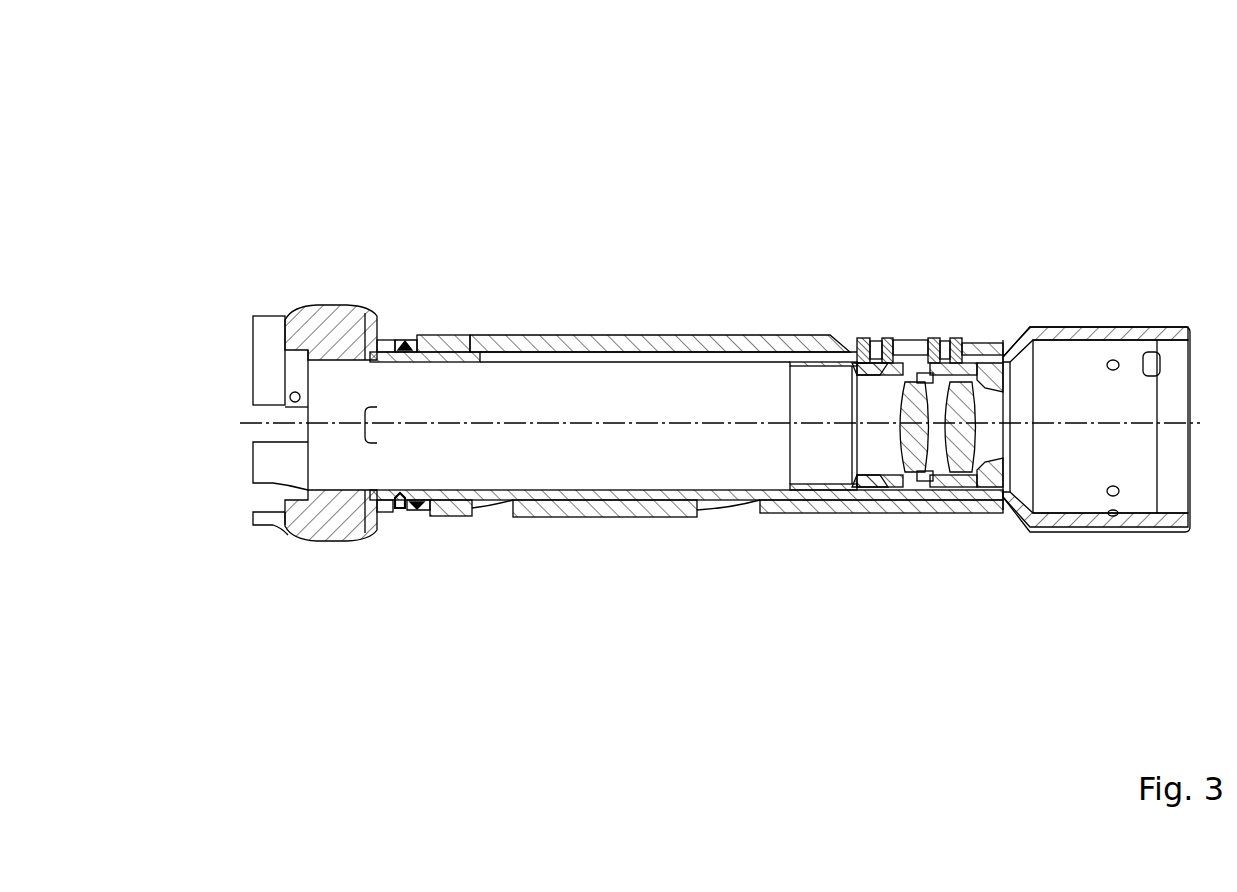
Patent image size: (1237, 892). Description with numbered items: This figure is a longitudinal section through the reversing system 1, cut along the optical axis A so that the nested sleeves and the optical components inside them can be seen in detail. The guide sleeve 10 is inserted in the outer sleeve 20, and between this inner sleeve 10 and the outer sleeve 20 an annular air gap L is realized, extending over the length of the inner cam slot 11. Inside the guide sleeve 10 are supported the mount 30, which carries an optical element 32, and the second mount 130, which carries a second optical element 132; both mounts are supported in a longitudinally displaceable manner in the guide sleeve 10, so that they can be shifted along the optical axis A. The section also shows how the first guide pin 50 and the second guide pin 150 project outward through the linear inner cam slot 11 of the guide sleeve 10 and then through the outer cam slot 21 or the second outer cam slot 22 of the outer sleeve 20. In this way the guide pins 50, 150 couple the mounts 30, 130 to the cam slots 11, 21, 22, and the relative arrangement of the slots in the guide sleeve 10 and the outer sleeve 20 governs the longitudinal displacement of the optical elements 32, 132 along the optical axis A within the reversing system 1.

The reversing system 1 is at (235, 145).
The guide sleeve 10 is at (1163, 330).
The inner cam slot 11 is at (658, 357).
The outer sleeve 20 is at (553, 347).
The outer cam slot 21 is at (963, 350).
The second outer cam slot 22 is at (845, 345).
The mount 30 is at (955, 478).
The optical element 32 is at (975, 475).
The first guide pin 50 is at (940, 340).
The second mount 130 is at (880, 485).
The second optical element 132 is at (910, 477).
The second guide pin 150 is at (877, 340).
The annular air gap L is at (726, 355).
The optical axis A is at (711, 410).